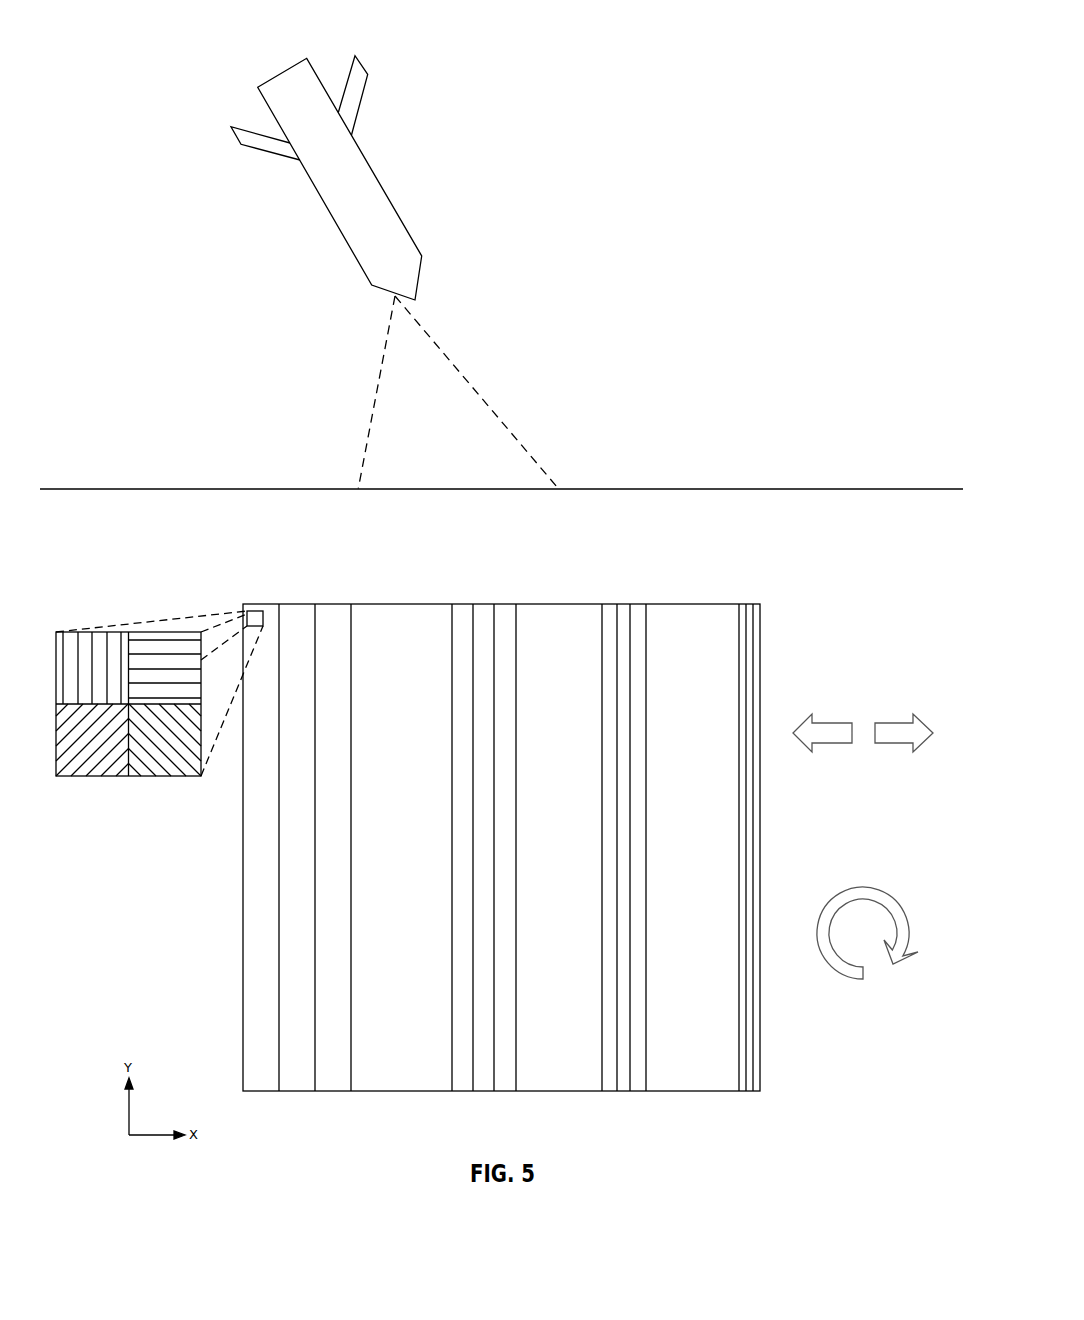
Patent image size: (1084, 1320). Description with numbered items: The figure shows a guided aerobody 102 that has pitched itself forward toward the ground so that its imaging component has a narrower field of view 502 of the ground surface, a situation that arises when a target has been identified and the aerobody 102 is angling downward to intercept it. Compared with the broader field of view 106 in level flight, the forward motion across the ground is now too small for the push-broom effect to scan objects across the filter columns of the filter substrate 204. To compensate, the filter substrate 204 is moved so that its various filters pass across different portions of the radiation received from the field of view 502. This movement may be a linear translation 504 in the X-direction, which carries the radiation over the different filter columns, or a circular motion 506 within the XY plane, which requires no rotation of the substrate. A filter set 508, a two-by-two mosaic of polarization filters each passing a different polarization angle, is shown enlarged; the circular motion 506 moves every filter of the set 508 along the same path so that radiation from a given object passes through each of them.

The guided aerobody 102 is at (413, 239).
The narrower field of view 502 is at (465, 387).
The field of view 106 is at (819, 489).
The filter substrate 204 is at (264, 581).
The filter set 508 is at (82, 815).
The linear translation 504 is at (845, 692).
The circular motion 506 is at (831, 865).